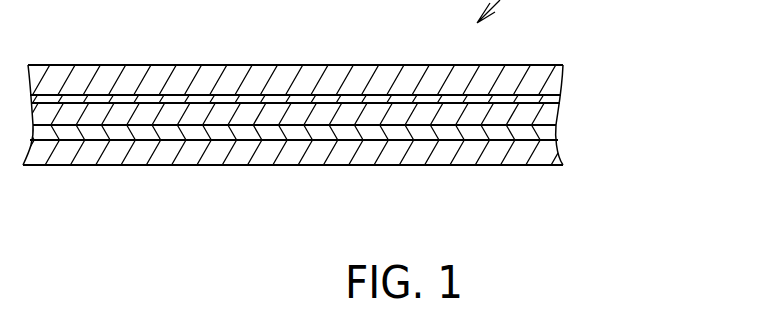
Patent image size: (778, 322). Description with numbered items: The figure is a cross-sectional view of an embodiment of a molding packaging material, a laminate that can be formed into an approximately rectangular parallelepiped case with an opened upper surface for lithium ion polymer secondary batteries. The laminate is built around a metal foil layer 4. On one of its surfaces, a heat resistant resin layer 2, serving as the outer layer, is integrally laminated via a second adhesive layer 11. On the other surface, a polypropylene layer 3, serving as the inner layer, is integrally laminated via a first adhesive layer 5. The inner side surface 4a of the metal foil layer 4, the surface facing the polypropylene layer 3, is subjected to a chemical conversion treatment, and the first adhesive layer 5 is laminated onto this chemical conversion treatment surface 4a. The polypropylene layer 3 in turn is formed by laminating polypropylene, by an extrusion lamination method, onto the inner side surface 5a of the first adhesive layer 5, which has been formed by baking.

The heat resistant resin layer 2 is at (548, 82).
The second adhesive layer 11 is at (555, 100).
The metal foil layer 4 is at (552, 115).
The first adhesive layer 5 is at (556, 132).
The polypropylene layer 3 is at (550, 150).
The inner side surface of the metal foil layer 4a is at (121, 125).
The inner side surface of the first adhesive layer 5a is at (242, 140).